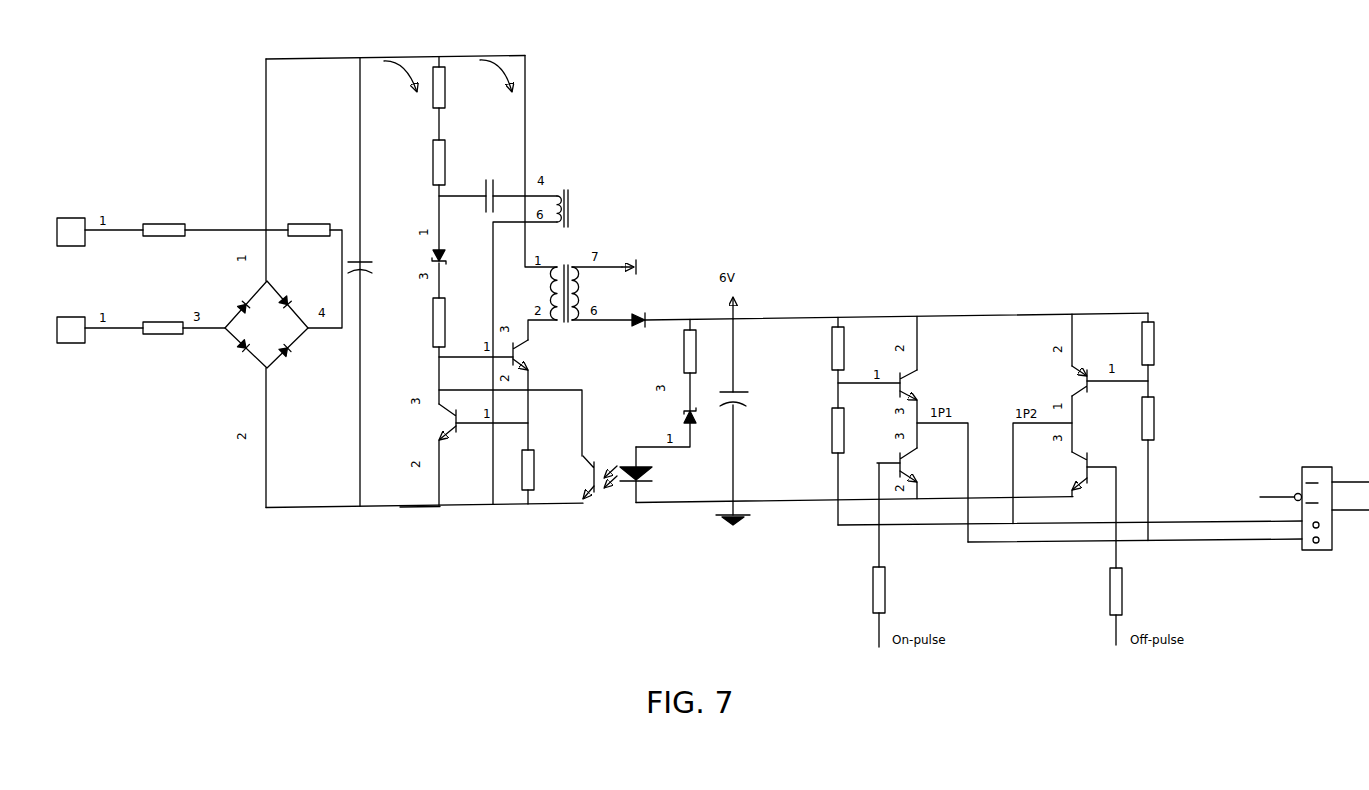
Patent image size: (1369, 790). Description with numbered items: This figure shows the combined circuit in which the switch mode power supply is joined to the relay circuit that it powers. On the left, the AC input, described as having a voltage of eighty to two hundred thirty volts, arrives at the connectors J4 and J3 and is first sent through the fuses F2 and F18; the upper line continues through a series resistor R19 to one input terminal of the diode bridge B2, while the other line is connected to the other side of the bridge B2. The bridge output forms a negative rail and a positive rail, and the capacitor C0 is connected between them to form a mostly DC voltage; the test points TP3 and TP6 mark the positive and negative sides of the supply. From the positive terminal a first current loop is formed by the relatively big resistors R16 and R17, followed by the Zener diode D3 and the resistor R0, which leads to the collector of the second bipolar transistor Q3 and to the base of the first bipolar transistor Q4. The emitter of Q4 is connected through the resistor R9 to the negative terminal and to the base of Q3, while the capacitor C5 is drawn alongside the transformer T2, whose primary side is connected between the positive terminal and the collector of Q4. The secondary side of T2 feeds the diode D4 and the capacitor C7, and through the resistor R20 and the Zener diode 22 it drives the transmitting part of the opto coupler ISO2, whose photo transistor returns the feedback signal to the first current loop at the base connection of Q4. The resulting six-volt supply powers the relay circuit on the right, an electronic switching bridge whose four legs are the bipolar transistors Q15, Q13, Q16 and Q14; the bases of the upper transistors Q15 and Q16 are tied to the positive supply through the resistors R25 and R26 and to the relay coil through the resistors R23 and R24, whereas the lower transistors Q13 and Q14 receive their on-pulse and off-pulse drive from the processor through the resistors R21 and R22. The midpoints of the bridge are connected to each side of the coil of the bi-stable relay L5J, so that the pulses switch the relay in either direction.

The connector J4 is at (71, 224).
The fuse F2 is at (164, 229).
The resistor R19 is at (309, 219).
The connector J3 is at (71, 322).
The fuse F18 is at (163, 318).
The bridge rectifier B2 is at (266, 324).
The capacitor C0 is at (370, 255).
The test point TP3 is at (448, 70).
The resistor R16 is at (453, 87).
The resistor R17 is at (453, 162).
The capacitor C5 is at (494, 189).
The zener diode D3 is at (451, 258).
The resistor R0 is at (449, 322).
The transistor Q4 is at (533, 355).
The transistor Q3 is at (432, 422).
The resistor R9 is at (539, 470).
The test point TP6 is at (413, 496).
The transformer T2 is at (571, 256).
The diode D4 is at (637, 310).
The optocoupler ISO2 is at (617, 491).
The resistor R20 is at (668, 351).
The zener diode 22 is at (671, 416).
The capacitor C7 is at (746, 399).
The resistor R25 is at (854, 348).
The resistor R23 is at (854, 430).
The transistor Q15 is at (923, 385).
The transistor Q13 is at (923, 465).
The resistor R21 is at (894, 590).
The transistor Q16 is at (1059, 381).
The transistor Q14 is at (1059, 471).
The resistor R22 is at (1132, 591).
The resistor R26 is at (1164, 343).
The resistor R24 is at (1164, 418).
The connector L5J is at (1314, 496).